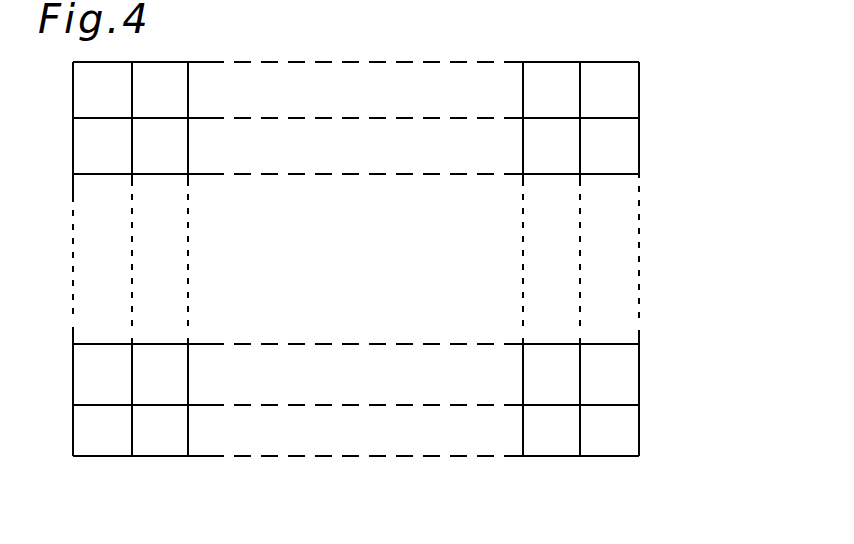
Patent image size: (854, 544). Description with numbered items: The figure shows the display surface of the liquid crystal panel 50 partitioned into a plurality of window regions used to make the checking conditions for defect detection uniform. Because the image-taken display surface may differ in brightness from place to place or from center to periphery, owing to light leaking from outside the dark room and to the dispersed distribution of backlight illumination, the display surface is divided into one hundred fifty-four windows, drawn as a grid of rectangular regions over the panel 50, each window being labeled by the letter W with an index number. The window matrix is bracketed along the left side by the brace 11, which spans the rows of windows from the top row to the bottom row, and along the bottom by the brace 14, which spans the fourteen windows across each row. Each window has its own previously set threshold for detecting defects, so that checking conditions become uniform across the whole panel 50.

The rows of windows (vertical count) 11 is at (62, 72).
The windows per row (horizontal count) 14 is at (635, 467).
The liquid crystal panel 50 is at (643, 271).